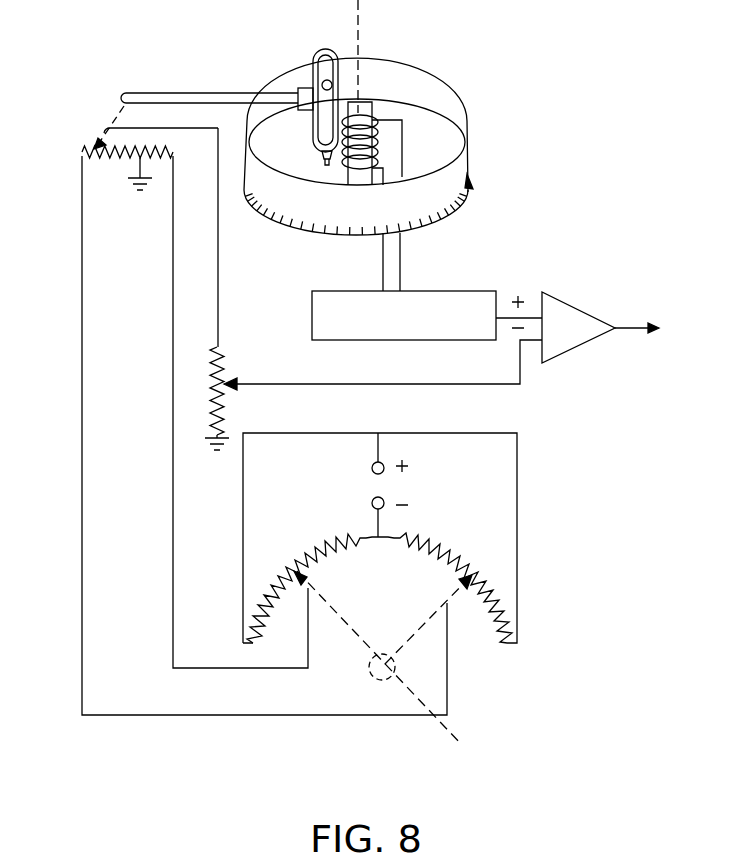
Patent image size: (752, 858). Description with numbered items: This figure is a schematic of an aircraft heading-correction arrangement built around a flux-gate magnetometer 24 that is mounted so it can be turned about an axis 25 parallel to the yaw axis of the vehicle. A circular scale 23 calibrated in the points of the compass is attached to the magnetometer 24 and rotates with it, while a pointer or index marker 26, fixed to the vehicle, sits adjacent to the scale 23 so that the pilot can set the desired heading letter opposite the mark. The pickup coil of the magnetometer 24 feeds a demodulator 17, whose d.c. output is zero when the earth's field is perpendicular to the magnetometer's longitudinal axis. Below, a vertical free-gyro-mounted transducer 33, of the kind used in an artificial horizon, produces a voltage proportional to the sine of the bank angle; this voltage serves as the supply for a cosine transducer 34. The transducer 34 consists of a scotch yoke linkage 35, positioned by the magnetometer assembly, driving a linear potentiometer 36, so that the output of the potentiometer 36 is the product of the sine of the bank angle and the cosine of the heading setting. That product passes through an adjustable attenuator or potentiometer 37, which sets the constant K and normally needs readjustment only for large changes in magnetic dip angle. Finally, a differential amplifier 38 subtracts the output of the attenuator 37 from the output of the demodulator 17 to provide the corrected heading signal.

The demodulator 17 is at (433, 291).
The circular scale 23 is at (283, 221).
The magnetometer 24 is at (382, 144).
The axis 25 is at (358, 43).
The index marker 26 is at (471, 181).
The vertical free-gyro-mounted transducer 33 is at (441, 545).
The cosine H transducer 34 is at (179, 85).
The scotch yoke linkage 35 is at (229, 93).
The linear potentiometer 36 is at (82, 148).
The adjustable attenuator or potentiometer 37 is at (223, 372).
The differential amplifier 38 is at (568, 350).